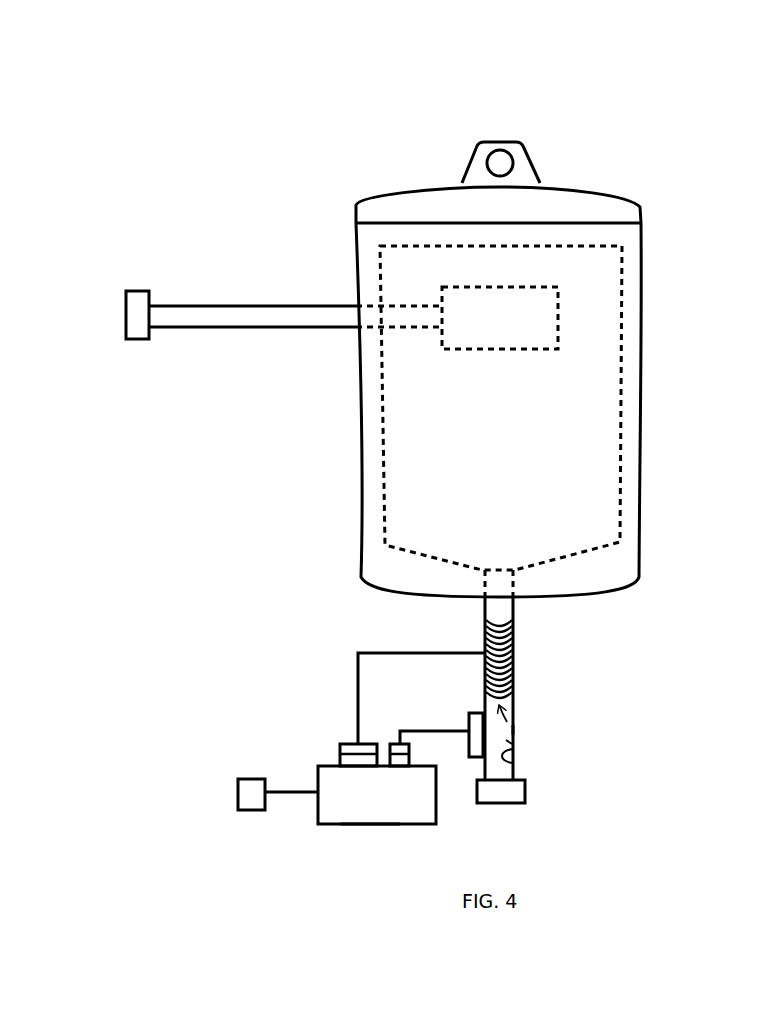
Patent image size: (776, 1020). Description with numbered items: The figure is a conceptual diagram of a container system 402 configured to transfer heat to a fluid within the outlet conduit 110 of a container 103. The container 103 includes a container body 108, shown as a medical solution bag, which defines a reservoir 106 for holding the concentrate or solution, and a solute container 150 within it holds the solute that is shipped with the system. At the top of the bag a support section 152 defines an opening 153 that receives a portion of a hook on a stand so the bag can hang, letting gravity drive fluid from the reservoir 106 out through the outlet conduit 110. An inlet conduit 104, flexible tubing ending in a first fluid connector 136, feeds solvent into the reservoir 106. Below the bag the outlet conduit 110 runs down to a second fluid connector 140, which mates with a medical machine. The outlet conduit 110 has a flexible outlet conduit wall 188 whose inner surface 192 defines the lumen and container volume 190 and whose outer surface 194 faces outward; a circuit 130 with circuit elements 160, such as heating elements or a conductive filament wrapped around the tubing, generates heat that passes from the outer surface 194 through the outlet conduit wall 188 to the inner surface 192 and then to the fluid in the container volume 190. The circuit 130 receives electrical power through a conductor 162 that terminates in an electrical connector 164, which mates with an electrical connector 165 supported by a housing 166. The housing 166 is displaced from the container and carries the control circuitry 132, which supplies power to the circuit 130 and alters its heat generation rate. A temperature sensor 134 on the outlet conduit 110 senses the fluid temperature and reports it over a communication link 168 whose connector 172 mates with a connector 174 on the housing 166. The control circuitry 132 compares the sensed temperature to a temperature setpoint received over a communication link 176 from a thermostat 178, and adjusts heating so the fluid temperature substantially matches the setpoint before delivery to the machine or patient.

The container system 402 is at (303, 173).
The container 103 is at (648, 357).
The container body 108 is at (643, 287).
The support section 152 is at (523, 175).
The opening 153 is at (503, 163).
The reservoir 106 is at (430, 527).
The solute container 150 is at (535, 333).
The inlet conduit 104 is at (178, 327).
The first fluid connector 136 is at (137, 308).
The circuit 130 is at (537, 648).
The outlet conduit 110 is at (483, 606).
The circuit elements 160 is at (513, 625).
The container volume 190 is at (515, 720).
The outer surface 194 is at (513, 730).
The outlet conduit wall 188 is at (508, 742).
The inner surface 192 is at (515, 762).
The second fluid connector 140 is at (510, 790).
The temperature sensor 134 is at (477, 715).
The conductor 162 is at (358, 697).
The communication link 168 is at (447, 730).
The electrical connector 164 is at (338, 750).
The electrical connector 165 is at (338, 760).
The connector 172 is at (408, 752).
The connector 174 is at (415, 760).
The control circuitry 132 is at (377, 795).
The housing 166 is at (363, 824).
The communication link 176 is at (297, 792).
The thermostat 178 is at (248, 800).